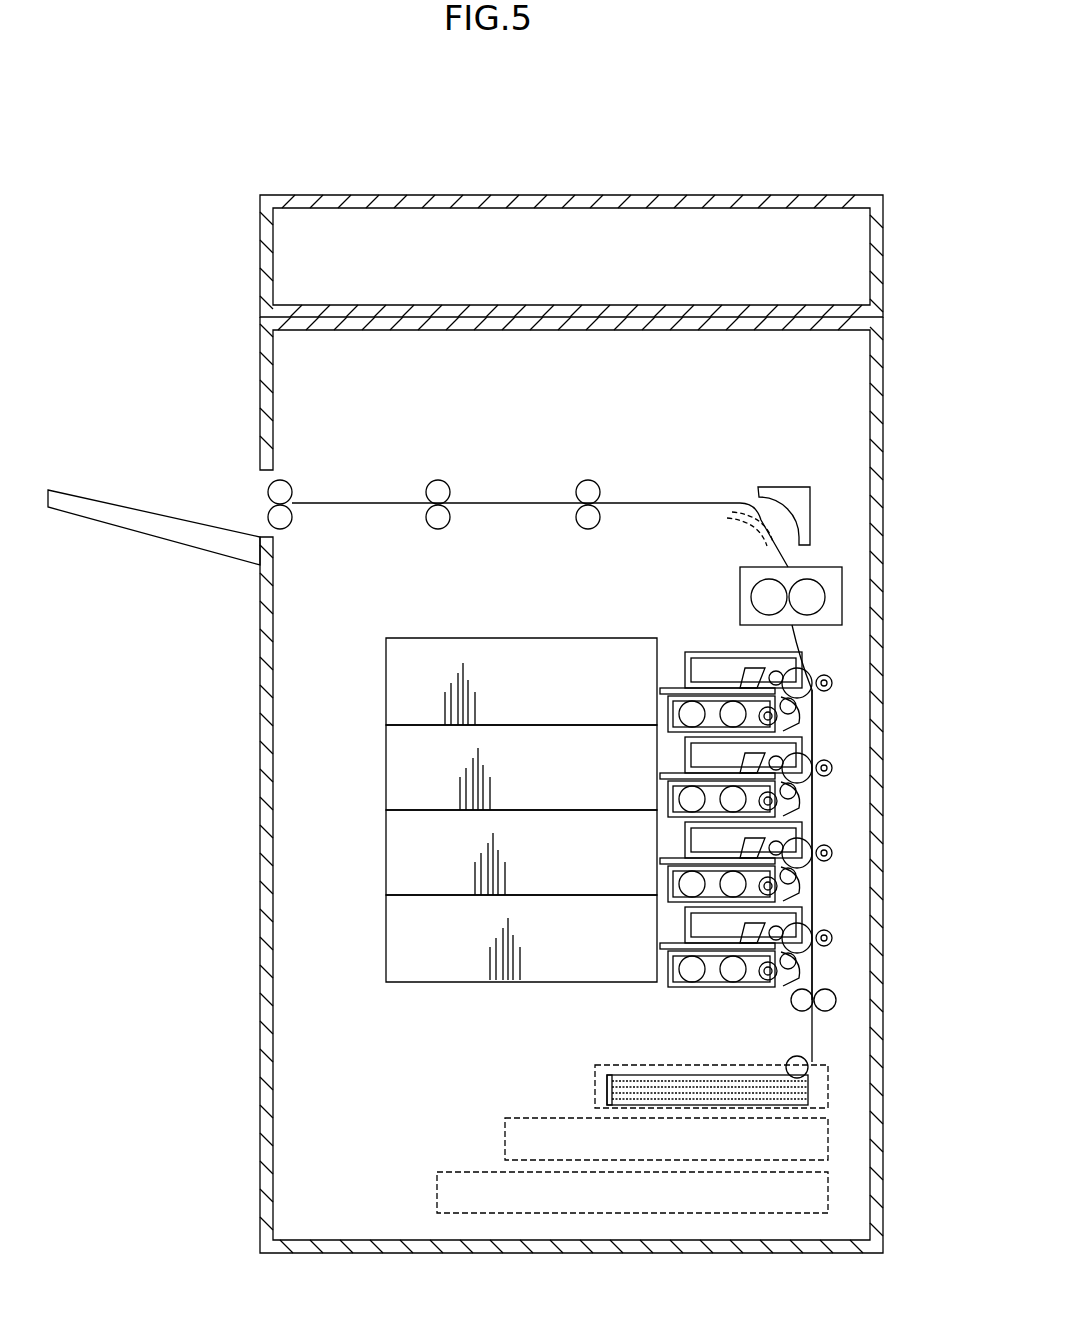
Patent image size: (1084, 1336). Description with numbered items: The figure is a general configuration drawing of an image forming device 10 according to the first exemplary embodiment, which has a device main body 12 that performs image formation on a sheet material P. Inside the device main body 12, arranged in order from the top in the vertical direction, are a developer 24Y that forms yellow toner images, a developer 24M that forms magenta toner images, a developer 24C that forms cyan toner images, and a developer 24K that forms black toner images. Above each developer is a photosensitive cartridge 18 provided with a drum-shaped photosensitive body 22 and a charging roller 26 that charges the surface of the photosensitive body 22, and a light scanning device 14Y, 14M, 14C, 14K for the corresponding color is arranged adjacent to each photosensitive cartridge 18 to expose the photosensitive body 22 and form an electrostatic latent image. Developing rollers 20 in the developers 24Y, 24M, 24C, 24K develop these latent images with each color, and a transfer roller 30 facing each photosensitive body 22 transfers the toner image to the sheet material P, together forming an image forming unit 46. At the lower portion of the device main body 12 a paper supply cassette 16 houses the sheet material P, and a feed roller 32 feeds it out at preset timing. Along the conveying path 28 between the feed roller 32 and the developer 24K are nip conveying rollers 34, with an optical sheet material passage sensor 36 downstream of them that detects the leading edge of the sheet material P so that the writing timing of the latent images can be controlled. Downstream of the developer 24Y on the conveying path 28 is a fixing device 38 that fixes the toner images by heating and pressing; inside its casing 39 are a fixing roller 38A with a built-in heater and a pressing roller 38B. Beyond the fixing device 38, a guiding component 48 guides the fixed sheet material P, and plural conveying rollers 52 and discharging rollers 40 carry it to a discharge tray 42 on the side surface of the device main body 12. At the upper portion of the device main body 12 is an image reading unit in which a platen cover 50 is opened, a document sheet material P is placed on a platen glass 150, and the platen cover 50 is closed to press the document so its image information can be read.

The image forming device 10 is at (535, 678).
The platen cover 50 is at (535, 256).
The platen glass 150 is at (553, 310).
The device main body 12 is at (262, 675).
The discharge tray 42 is at (150, 534).
The conveying path 28 is at (682, 500).
The discharging rollers 40 is at (286, 482).
The conveying rollers 52 is at (440, 482).
The guiding component 48 is at (810, 512).
The fixing device 38 is at (756, 566).
The casing 39 is at (802, 565).
The fixing roller 38A is at (762, 598).
The pressing roller 38B is at (818, 588).
The light scanning device 14Y is at (386, 680).
The light scanning device 14M is at (386, 770).
The light scanning device 14C is at (386, 858).
The light scanning device 14K is at (386, 947).
The photosensitive cartridge 18 is at (682, 670).
The charging roller 26 is at (736, 662).
The developer 24Y is at (666, 716).
The developer 24M is at (666, 801).
The developer 24C is at (666, 886).
The developer 24K is at (666, 971).
The developing roller 20 is at (895, 1000).
The photosensitive body 22 is at (826, 691).
The image forming unit 46 is at (826, 676).
The transfer roller 30 is at (836, 682).
The sheet material passage sensor 36 is at (830, 1003).
The nip conveying rollers 34 is at (822, 1009).
The feed roller 32 is at (790, 1057).
The paper supply cassette 16 is at (683, 1114).
The sheet material P is at (671, 1074).